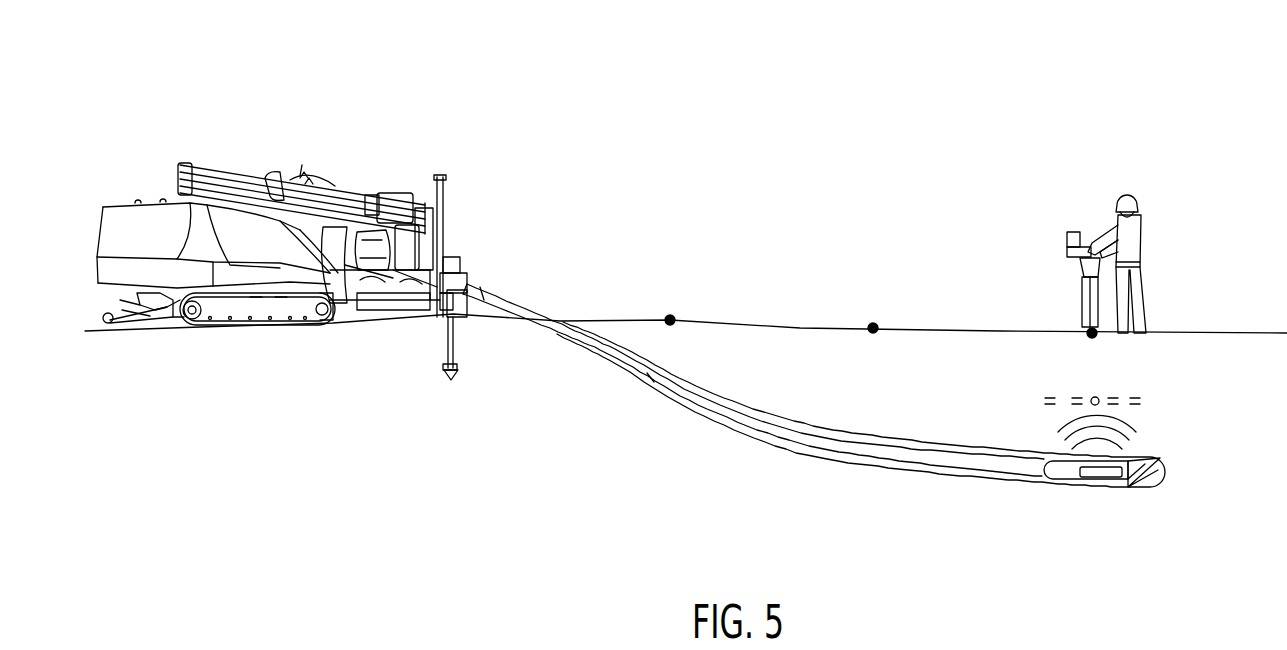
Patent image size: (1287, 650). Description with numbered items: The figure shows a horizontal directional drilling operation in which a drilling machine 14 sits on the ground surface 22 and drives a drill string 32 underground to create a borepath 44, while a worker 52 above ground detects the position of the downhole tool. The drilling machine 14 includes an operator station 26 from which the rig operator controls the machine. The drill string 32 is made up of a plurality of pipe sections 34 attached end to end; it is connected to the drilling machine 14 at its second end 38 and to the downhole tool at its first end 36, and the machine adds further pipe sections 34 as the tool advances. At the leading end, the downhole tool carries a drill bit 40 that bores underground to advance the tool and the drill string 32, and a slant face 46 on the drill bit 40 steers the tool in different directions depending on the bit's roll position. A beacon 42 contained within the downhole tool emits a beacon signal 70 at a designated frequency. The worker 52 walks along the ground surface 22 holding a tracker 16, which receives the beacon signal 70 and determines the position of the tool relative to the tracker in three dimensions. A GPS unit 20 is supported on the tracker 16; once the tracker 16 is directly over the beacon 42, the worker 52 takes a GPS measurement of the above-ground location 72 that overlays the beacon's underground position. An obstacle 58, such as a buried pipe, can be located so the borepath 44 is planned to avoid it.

The drilling machine 14 is at (282, 217).
The tracker 16 is at (1052, 272).
The GPS unit 20 is at (1048, 237).
The ground surface 22 is at (686, 314).
The operator station 26 is at (301, 187).
The drill string 32 is at (617, 399).
The pipe sections 34 is at (753, 380).
The first end 36 is at (1093, 507).
The second end 38 is at (521, 270).
The drill bit 40 is at (1167, 507).
The beacon 42 is at (1073, 511).
The borepath 44 is at (861, 404).
The slant face 46 is at (1167, 493).
The worker 52 is at (1147, 264).
The obstacle 58 is at (1107, 381).
The beacon signal 70 is at (1132, 425).
The above-ground location 72 is at (881, 322).